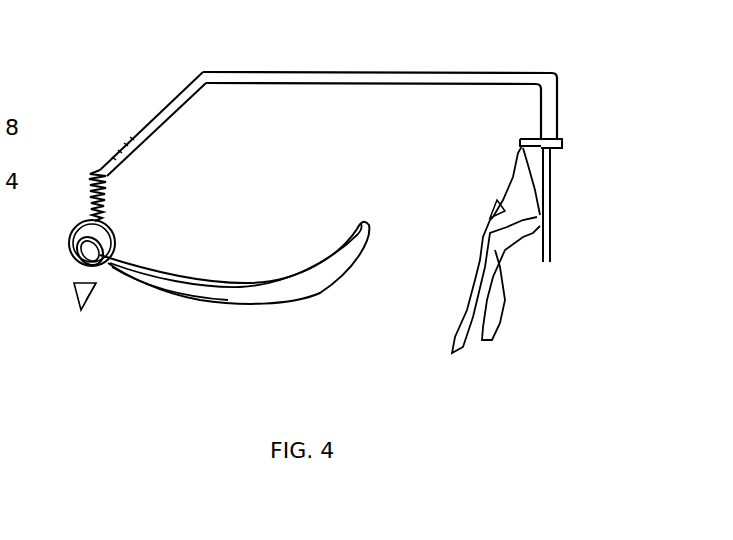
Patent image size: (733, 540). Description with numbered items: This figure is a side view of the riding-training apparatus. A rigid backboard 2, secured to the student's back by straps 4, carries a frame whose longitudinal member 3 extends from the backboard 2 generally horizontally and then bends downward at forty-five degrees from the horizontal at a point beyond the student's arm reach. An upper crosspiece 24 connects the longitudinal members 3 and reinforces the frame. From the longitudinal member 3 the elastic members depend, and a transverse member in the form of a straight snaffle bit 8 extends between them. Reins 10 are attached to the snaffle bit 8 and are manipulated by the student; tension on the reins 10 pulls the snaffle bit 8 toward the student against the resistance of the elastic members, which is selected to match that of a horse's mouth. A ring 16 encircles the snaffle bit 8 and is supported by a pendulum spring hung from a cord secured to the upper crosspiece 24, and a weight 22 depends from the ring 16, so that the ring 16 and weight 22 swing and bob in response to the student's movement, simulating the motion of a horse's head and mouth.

The backboard 2 is at (553, 198).
The longitudinal member 3 is at (404, 71).
The straps 4 is at (540, 260).
The snaffle bit 8 is at (101, 268).
The reins 10 is at (285, 305).
The ring 16 is at (73, 262).
The weight 22 is at (80, 283).
The upper crosspiece 24 is at (9, 71).